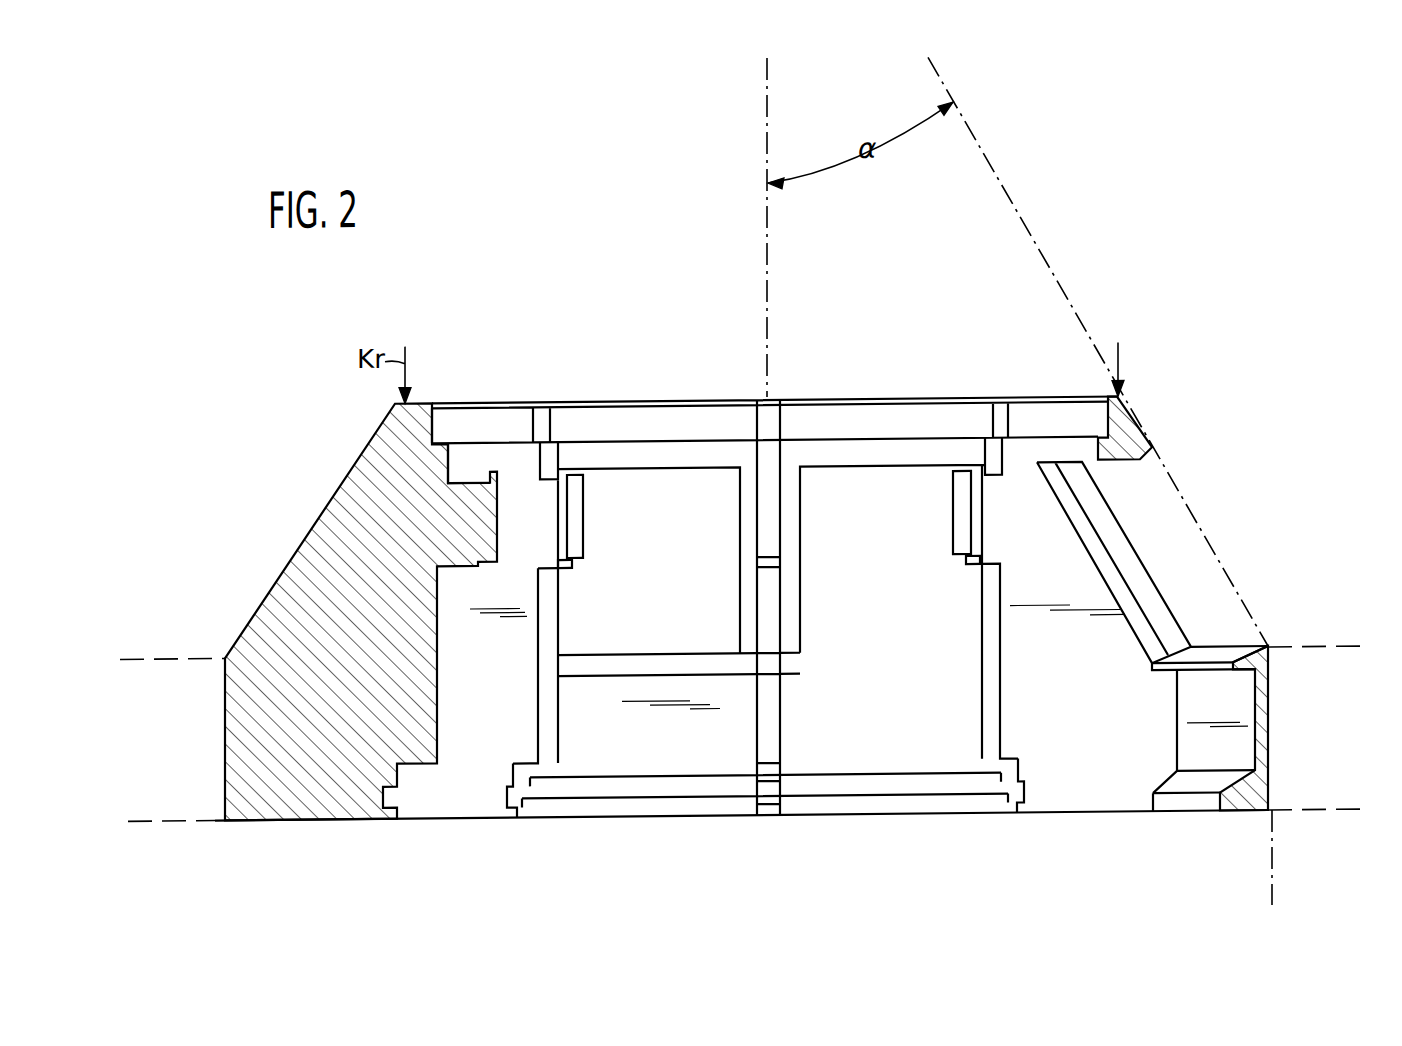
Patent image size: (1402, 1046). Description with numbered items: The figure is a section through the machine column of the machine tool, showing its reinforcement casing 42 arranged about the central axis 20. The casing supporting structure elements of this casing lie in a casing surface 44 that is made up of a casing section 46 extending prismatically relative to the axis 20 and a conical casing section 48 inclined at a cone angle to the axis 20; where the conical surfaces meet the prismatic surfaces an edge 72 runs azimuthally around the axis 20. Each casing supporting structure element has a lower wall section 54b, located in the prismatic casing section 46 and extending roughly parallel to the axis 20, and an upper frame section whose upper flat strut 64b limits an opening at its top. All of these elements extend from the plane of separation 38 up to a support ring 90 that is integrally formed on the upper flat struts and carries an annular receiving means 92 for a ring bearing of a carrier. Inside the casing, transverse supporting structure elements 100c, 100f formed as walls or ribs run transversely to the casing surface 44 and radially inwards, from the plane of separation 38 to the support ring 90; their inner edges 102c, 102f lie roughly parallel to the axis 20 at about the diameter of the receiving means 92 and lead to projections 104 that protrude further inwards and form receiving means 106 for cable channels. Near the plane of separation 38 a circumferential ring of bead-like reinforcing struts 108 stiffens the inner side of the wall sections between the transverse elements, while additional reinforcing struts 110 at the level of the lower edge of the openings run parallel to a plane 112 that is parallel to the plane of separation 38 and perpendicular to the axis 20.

The axis 20 is at (767, 201).
The plane of separation 38 is at (176, 814).
The reinforcement casing 42 is at (312, 489).
The casing surface 44 is at (1192, 490).
The prismatic casing section 46 is at (1274, 843).
The conical casing section 48 is at (1213, 547).
The lower wall section 54b is at (1270, 742).
The upper flat strut 64b is at (1135, 432).
The edge 72 is at (1264, 652).
The support ring 90 is at (1112, 412).
The receiving means 92 is at (440, 404).
The transverse supporting structure element 100c is at (1067, 757).
The transverse supporting structure element 100f is at (349, 760).
The inner edge 102c is at (985, 724).
The inner edge 102f is at (438, 704).
The projection 104 is at (578, 532).
The receiving means for cable channels 106 is at (472, 477).
The reinforcing strut 108 is at (1198, 830).
The additional reinforcing strut 110 is at (1157, 676).
The plane 112 is at (163, 652).